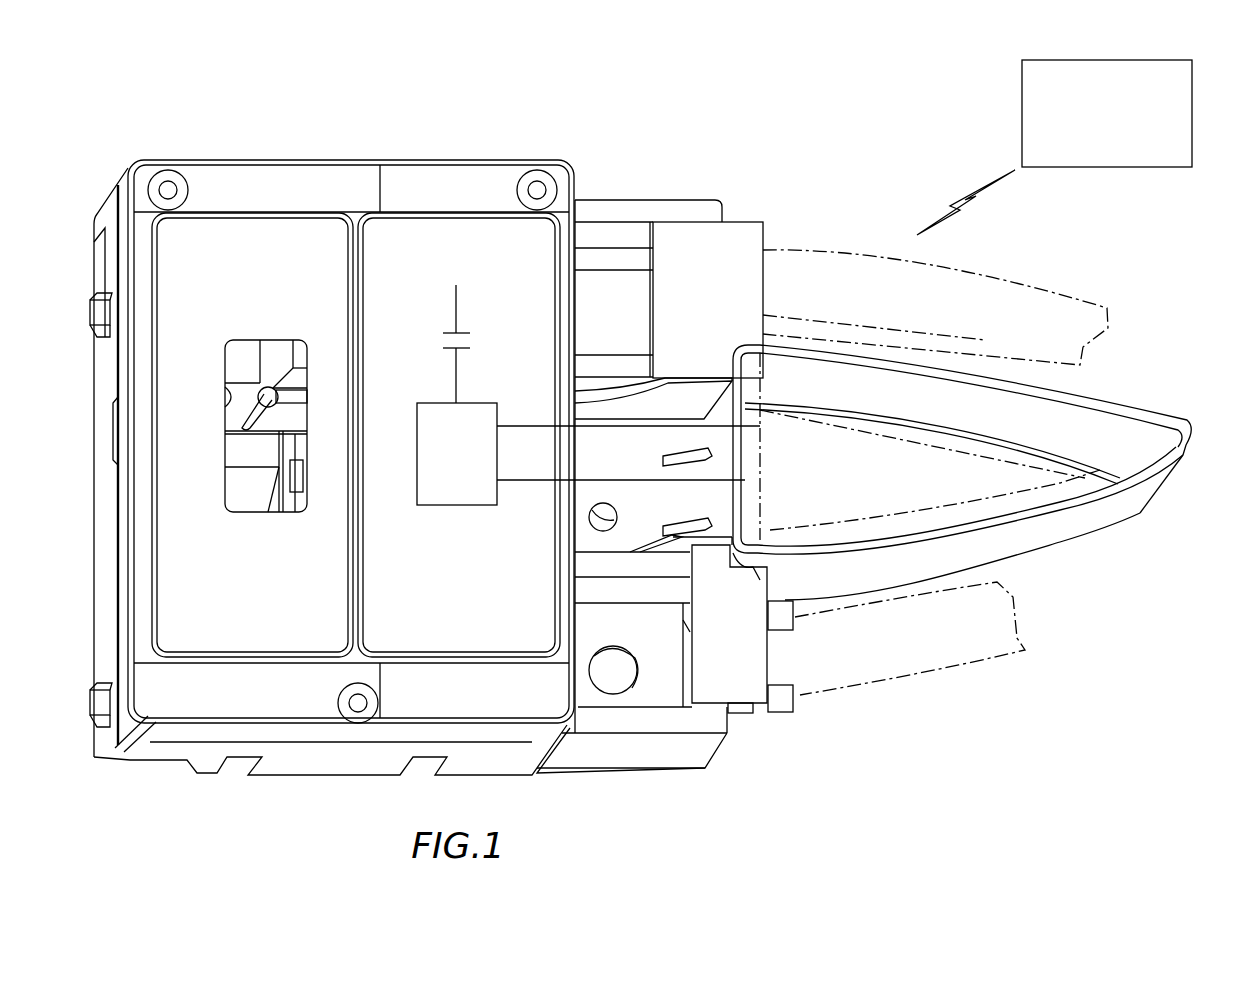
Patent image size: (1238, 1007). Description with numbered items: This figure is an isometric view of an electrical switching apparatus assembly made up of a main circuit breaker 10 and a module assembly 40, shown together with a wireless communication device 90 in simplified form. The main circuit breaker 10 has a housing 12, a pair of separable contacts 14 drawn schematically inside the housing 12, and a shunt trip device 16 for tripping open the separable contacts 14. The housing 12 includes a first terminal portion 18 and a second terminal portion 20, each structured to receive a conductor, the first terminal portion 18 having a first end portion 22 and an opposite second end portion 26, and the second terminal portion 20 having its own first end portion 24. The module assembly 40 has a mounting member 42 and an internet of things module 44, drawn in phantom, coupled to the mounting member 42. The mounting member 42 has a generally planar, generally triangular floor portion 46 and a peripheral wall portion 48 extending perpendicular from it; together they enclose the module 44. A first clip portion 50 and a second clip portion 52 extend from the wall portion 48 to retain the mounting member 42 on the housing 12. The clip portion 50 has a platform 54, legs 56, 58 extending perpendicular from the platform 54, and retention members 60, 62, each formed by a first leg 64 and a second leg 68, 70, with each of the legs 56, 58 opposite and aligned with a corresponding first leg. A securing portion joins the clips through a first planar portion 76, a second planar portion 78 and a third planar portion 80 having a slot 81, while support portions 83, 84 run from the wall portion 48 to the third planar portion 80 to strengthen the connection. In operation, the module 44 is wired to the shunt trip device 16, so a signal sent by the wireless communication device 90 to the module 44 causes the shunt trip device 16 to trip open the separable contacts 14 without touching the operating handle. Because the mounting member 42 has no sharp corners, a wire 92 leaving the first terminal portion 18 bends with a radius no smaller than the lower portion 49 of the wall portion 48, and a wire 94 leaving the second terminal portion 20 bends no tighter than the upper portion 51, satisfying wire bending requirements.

The main circuit breaker 10 is at (563, 150).
The housing 12 is at (325, 760).
The pair of separable contacts 14 is at (480, 312).
The shunt trip device 16 is at (440, 506).
The first terminal portion 18 is at (625, 752).
The second terminal portion 20 is at (600, 198).
The first end portion 22 is at (665, 727).
The first end portion 24 is at (648, 204).
The second end portion 26 is at (605, 776).
The module assembly 40 is at (816, 295).
The mounting member 42 is at (1092, 556).
The internet of things (IOT) module 44 is at (975, 355).
The floor portion 46 is at (934, 524).
The peripheral wall portion 48 is at (1133, 498).
The lower portion 49 is at (1105, 520).
The first clip portion 50 is at (808, 665).
The upper portion 51 is at (932, 390).
The second clip portion 52 is at (773, 235).
The platform 54 is at (745, 692).
The leg 56 is at (690, 702).
The leg 58 is at (683, 612).
The retention member 60 is at (780, 715).
The retention member 62 is at (803, 624).
The first leg 64 is at (738, 714).
The second leg 68 is at (770, 700).
The second leg 70 is at (770, 612).
The first planar portion 76 is at (678, 549).
The second planar portion 78 is at (688, 412).
The third planar portion 80 is at (626, 555).
The slot 81 is at (596, 523).
The support portion 83 is at (690, 521).
The support portion 84 is at (667, 455).
The wireless communication device 90 is at (1022, 80).
The wire 92 is at (955, 680).
The wire 94 is at (1062, 288).